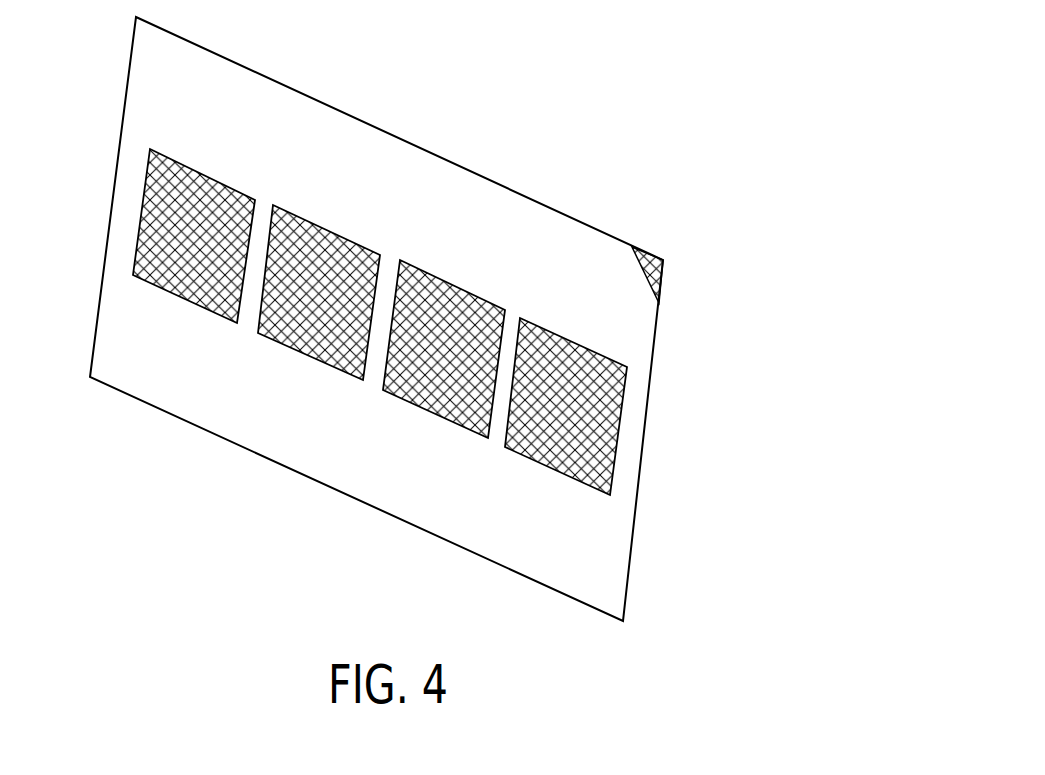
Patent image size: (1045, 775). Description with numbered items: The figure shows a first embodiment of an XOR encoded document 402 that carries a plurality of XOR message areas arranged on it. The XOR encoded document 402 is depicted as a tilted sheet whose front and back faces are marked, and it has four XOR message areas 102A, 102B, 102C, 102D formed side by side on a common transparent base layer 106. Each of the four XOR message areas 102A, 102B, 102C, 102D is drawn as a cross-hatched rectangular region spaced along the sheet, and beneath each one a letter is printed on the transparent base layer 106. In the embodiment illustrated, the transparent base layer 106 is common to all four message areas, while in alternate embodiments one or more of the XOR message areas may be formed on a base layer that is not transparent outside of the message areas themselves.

The transparent base layer 106 is at (94, 338).
The XOR message area 102A is at (147, 253).
The XOR message area 102B is at (330, 245).
The XOR message area 102C is at (433, 290).
The XOR message area 102D is at (613, 410).
The XOR encoded document 402 is at (722, 175).